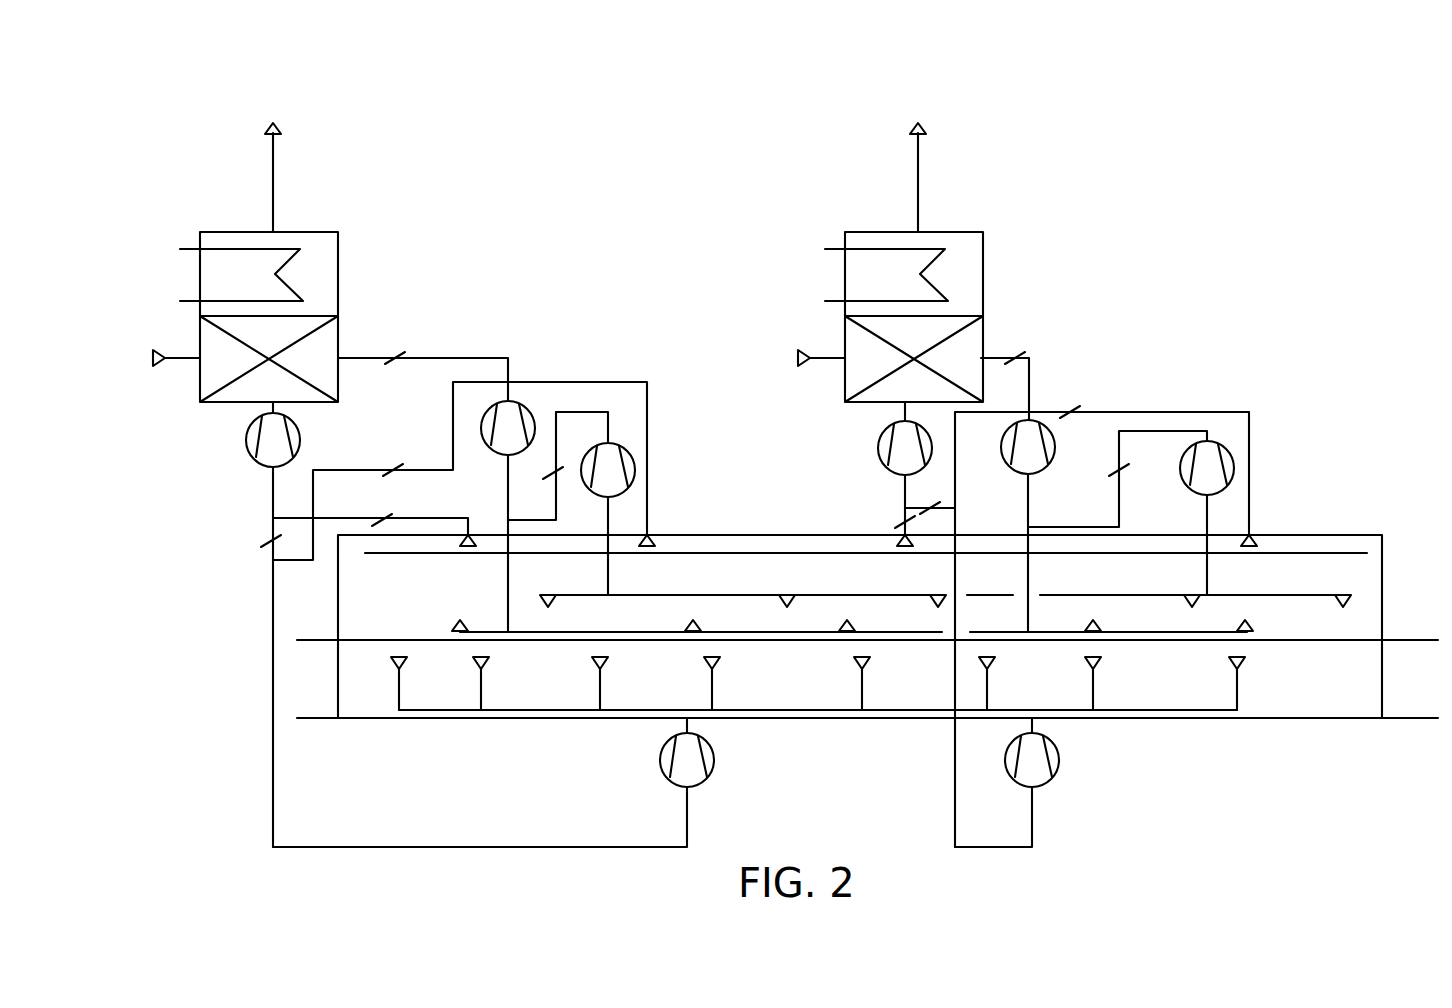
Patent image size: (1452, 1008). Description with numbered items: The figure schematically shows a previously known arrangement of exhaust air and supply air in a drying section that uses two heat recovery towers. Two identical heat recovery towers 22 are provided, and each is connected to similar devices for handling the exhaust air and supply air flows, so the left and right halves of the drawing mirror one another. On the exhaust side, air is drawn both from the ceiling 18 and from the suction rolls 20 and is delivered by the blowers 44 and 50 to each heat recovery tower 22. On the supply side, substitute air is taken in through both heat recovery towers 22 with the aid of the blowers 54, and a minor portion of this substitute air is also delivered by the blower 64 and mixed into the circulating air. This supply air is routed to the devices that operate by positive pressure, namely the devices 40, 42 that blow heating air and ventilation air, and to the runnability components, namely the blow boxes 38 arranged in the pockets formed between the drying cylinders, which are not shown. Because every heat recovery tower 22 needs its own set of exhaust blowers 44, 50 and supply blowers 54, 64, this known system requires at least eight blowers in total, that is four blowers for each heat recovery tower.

The ceiling 18 is at (718, 547).
The suction rolls 20 is at (1244, 670).
The heat recovery tower 22 is at (388, 188).
The blow boxes 38 is at (1349, 607).
The device blowing heating air 40 is at (1247, 624).
The device blowing ventilation air 42 is at (852, 625).
The blower 44 is at (268, 450).
The blower 50 is at (693, 765).
The blower 54 is at (515, 423).
The blower 64 is at (613, 465).